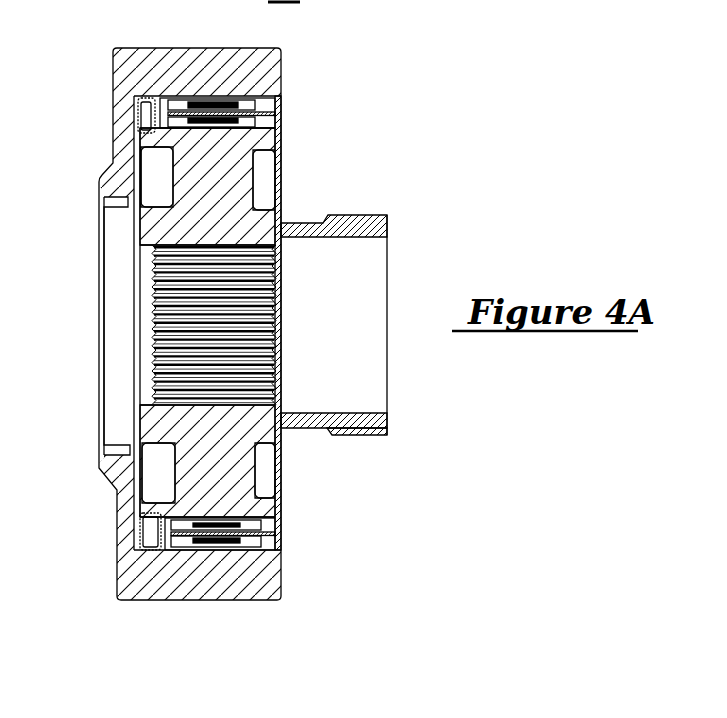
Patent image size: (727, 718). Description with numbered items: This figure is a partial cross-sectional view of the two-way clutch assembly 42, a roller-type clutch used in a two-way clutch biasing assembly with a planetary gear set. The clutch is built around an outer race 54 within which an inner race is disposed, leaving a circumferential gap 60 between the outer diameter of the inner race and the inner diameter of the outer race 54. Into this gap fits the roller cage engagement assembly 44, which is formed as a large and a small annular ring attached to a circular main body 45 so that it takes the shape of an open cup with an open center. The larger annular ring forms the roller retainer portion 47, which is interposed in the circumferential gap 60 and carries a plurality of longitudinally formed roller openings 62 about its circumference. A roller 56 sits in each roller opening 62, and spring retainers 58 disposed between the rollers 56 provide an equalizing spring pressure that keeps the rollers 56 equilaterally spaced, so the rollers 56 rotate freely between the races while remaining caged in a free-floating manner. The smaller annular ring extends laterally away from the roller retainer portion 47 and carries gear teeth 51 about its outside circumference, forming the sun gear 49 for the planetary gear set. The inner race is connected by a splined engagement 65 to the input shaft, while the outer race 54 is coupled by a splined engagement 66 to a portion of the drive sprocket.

The two-way clutch assembly 42 is at (111, 47).
The roller cage engagement assembly 44 is at (377, 207).
The main body 45 is at (281, 166).
The roller retainer portion 47 is at (270, 120).
The sun gear 49 is at (347, 413).
The gear teeth 51 is at (363, 436).
The outer race 54 is at (281, 67).
The rollers 56 is at (268, 100).
The spring retainers 58 is at (225, 552).
The circumferential gap 60 is at (158, 116).
The roller openings 62 is at (165, 552).
The splined engagement 65 is at (278, 311).
The splined engagement 66 is at (122, 440).